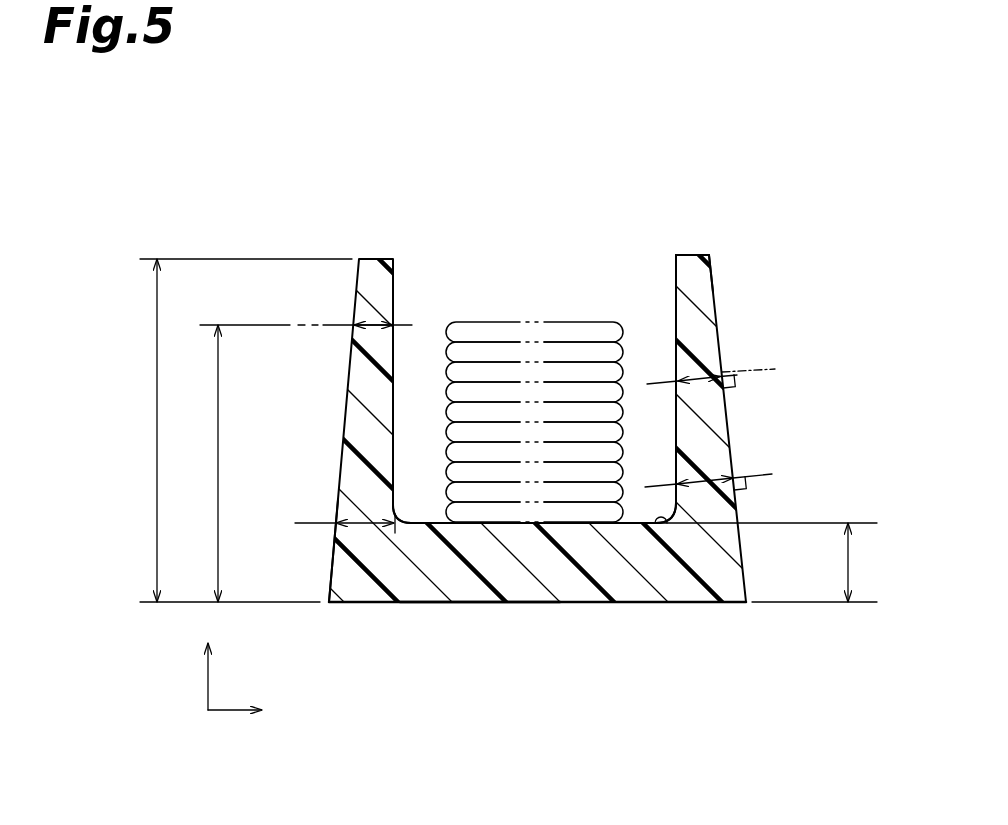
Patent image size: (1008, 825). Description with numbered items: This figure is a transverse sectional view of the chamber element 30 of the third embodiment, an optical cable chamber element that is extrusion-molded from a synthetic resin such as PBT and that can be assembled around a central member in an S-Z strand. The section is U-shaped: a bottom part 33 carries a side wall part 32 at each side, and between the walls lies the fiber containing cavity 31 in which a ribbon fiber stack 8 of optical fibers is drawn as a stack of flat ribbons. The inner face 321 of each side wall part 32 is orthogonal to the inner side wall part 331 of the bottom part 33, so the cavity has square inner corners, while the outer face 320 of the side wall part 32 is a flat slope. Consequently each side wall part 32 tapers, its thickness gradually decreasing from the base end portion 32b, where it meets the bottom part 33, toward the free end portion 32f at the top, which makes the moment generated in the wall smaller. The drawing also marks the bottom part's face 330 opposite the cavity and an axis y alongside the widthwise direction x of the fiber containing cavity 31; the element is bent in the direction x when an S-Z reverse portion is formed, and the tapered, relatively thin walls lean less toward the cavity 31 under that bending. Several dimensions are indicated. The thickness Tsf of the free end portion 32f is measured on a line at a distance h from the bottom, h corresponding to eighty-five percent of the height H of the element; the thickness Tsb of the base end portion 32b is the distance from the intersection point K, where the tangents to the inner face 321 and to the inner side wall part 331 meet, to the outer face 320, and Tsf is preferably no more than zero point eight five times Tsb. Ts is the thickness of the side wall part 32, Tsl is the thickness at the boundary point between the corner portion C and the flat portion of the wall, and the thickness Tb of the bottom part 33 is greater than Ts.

The chamber element 30 is at (542, 412).
The fiber containing cavity 31 is at (535, 381).
The side wall part 32 is at (352, 382).
The base end portion 32b is at (346, 512).
The free end portion 32f is at (711, 289).
The outer face 320 is at (728, 407).
The inner face 321 is at (675, 258).
The bottom part 33 is at (575, 602).
The bottom outer surface 330 is at (485, 602).
The inner side wall part 331 is at (414, 523).
The ribbon fiber stack 8 is at (433, 335).
The intersection point K is at (405, 516).
The corner portion C is at (658, 522).
The height H is at (246, 430).
The distance h is at (306, 463).
The thickness of the free end portion Tsf is at (374, 322).
The thickness of the side wall part Ts is at (708, 366).
The thickness at the boundary point Tsl is at (703, 478).
The thickness of the base end portion Tsb is at (347, 568).
The thickness of the bottom part Tb is at (766, 562).
The widthwise direction x is at (241, 729).
The y axis y is at (194, 669).